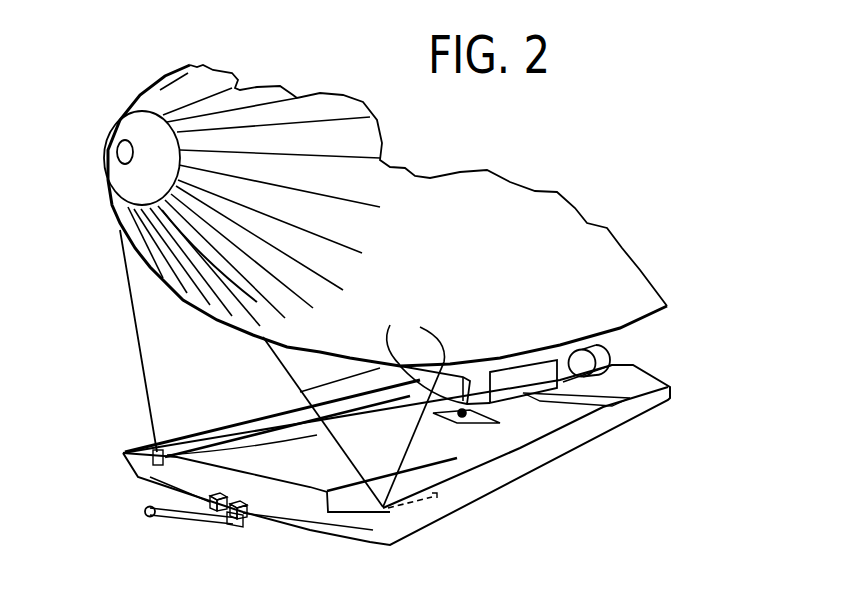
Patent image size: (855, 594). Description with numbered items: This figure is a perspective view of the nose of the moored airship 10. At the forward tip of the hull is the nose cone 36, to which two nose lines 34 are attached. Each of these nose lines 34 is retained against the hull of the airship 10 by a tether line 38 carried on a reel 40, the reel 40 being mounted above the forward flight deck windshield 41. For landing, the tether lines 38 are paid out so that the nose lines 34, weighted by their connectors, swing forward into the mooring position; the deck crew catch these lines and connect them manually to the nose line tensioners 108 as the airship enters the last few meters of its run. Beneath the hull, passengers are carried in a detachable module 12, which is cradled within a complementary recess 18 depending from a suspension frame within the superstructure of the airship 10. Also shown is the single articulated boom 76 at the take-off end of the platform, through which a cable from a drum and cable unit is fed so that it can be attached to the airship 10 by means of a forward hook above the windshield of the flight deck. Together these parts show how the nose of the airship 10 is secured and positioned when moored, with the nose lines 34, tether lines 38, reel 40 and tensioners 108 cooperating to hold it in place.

The airship 10 is at (440, 218).
The detachable module 12 is at (534, 385).
The complementary recess 18 is at (540, 362).
The nose lines 34 is at (128, 281).
The nose cone 36 is at (122, 153).
The tether line 38 is at (411, 450).
The reel 40 is at (416, 340).
The forward flight deck windshield 41 is at (377, 368).
The articulated boom 76 is at (162, 516).
The nose line tensioners 108 is at (442, 512).